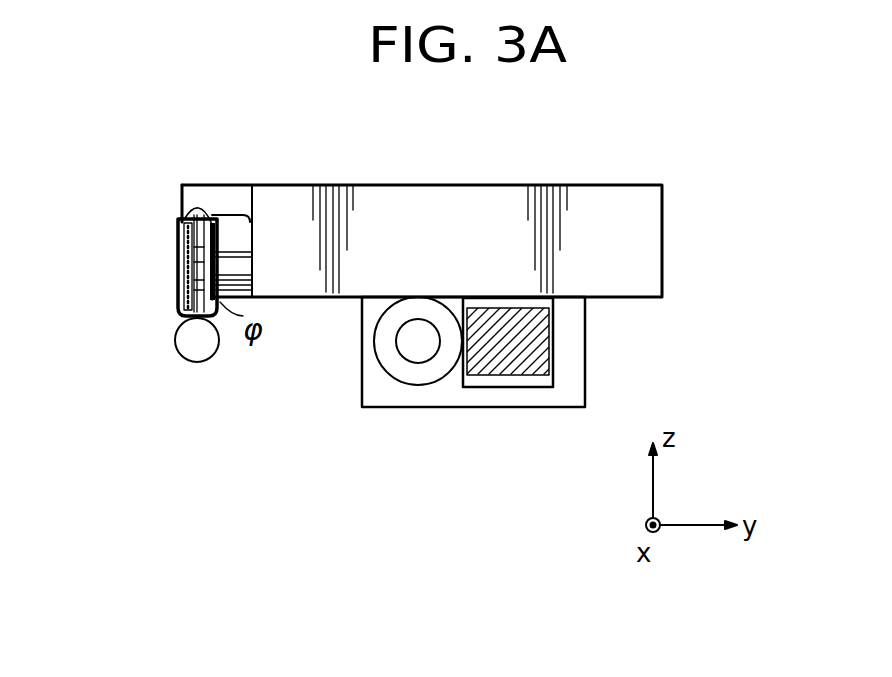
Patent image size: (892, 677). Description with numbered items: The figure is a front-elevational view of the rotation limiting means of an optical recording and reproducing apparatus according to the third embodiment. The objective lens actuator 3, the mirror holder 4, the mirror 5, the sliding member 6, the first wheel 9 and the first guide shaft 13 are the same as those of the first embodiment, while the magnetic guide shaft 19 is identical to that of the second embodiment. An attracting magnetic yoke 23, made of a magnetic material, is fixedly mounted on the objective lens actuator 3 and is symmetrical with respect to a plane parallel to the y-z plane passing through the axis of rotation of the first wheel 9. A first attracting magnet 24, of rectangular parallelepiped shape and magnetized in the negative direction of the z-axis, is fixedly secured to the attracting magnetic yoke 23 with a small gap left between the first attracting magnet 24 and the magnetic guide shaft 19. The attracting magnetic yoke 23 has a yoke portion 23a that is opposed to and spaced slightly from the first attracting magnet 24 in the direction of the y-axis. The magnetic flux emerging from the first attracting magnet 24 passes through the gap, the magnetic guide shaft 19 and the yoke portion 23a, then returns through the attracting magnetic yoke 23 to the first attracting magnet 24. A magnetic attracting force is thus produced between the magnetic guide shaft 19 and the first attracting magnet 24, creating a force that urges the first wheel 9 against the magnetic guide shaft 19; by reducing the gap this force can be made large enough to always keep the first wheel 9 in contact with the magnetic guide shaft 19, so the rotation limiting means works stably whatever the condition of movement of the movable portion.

The objective lens actuator 3 is at (648, 223).
The mirror holder 4 is at (573, 341).
The mirror 5 is at (520, 362).
The sliding member 6 is at (418, 378).
The first wheel 9 is at (178, 289).
The first guide shaft 13 is at (403, 350).
The magnetic guide shaft 19 is at (185, 347).
The attracting magnetic yoke 23 is at (190, 190).
The yoke portion 23a is at (238, 213).
The first attracting magnet 24 is at (182, 248).